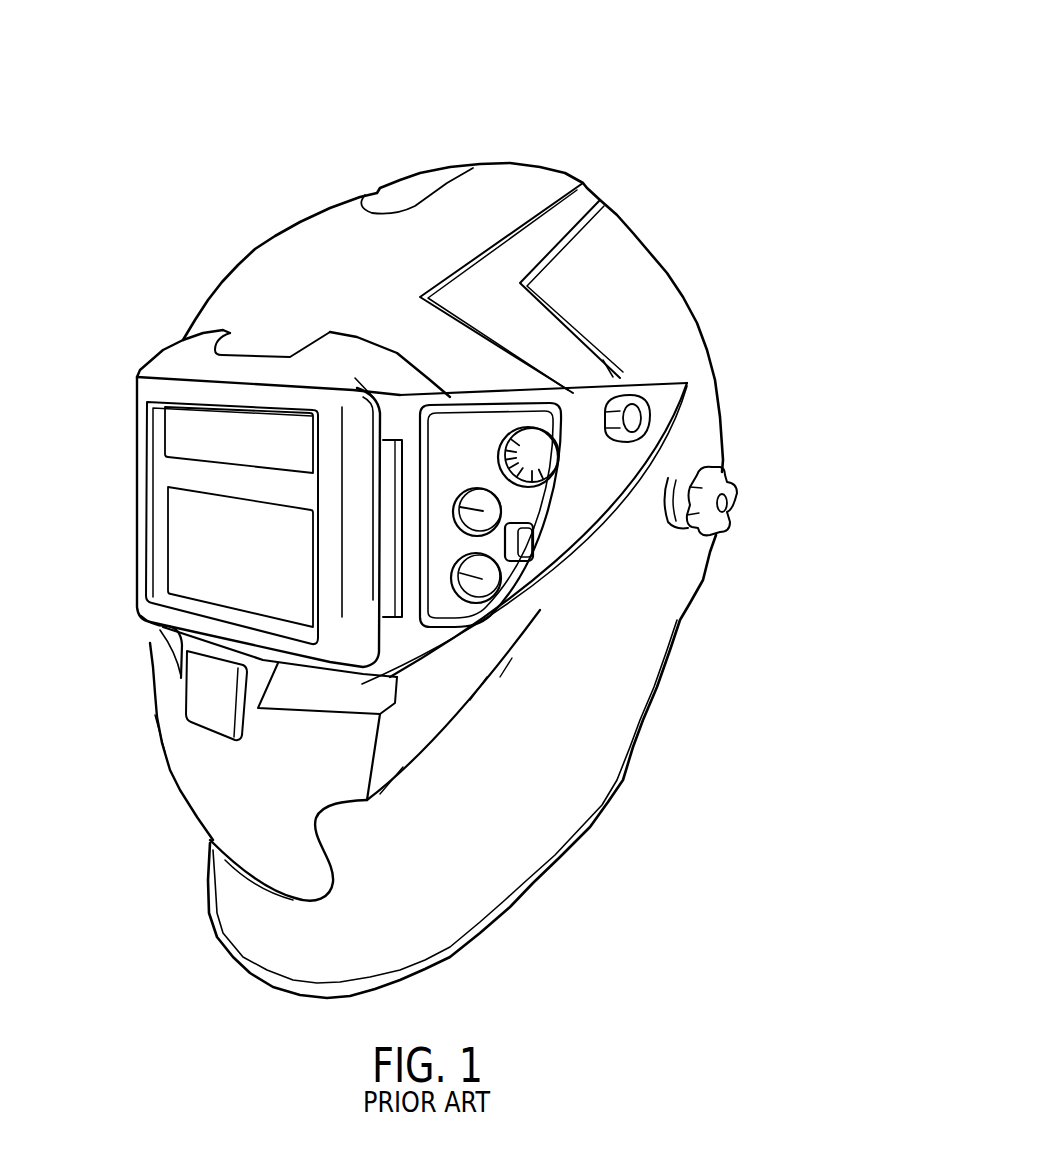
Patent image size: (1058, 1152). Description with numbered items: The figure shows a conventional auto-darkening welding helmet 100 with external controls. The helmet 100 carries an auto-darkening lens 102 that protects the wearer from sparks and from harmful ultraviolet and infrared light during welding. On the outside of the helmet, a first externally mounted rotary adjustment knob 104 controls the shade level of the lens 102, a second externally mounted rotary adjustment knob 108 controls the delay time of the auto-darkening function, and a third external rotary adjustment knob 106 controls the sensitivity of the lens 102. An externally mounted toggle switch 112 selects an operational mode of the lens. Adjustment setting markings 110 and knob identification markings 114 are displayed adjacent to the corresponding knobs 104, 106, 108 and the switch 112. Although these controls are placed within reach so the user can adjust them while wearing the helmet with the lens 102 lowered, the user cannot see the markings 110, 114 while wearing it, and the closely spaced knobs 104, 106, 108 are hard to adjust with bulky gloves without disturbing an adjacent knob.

The auto-darkening welding helmet 100 is at (687, 82).
The auto-darkening lens 102 is at (181, 562).
The first externally mounted rotary adjustment knob 104 is at (543, 464).
The third external rotary adjustment knob 106 is at (490, 592).
The second externally mounted rotary adjustment knob 108 is at (485, 498).
The adjustment setting markings 110 is at (509, 432).
The externally mounted toggle switch 112 is at (531, 538).
The knob identification markings 114 is at (524, 499).